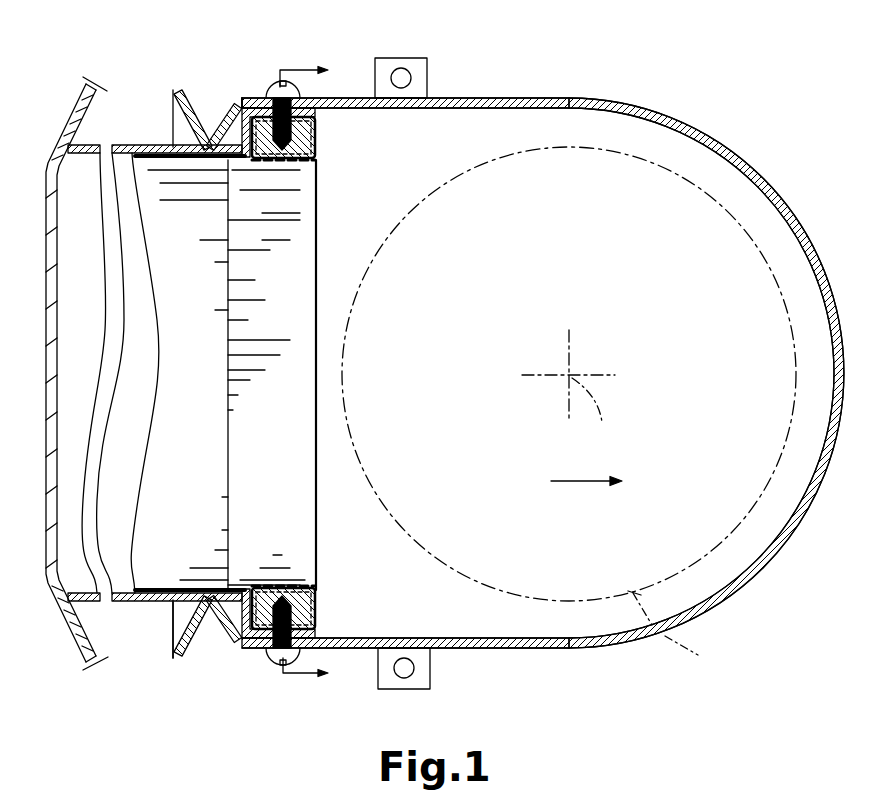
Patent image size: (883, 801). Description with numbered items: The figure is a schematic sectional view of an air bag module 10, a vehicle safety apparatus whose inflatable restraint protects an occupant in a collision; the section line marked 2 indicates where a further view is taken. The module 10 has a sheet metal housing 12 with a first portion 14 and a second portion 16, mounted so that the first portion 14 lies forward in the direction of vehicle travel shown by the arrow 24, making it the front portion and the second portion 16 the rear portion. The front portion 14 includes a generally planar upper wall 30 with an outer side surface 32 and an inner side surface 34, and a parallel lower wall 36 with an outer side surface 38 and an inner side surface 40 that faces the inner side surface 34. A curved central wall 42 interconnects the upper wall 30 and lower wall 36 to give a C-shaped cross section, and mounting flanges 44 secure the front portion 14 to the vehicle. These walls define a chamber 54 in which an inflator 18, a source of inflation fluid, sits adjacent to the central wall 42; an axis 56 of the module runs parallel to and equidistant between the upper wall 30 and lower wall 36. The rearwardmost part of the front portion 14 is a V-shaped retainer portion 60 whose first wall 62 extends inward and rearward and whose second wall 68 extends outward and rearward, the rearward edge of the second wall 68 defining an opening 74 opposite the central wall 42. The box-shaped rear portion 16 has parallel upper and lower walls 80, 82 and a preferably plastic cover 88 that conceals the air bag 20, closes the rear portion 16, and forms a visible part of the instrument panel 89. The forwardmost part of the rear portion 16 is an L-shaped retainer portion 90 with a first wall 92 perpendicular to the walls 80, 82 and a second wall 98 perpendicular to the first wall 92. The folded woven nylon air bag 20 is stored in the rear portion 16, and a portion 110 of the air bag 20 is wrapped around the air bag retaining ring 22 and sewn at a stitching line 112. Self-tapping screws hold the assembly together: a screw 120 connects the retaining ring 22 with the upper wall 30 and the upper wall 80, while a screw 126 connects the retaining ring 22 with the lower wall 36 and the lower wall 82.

The air bag module 10 is at (646, 68).
The housing 12 is at (166, 70).
The first portion 14 is at (686, 112).
The second portion 16 is at (134, 142).
The inflator 18 is at (569, 409).
The air bag 20 is at (322, 220).
The air bag retaining ring 22 is at (320, 608).
The arrow 24 is at (560, 482).
The upper wall 30 is at (522, 92).
The outer side surface 32 is at (494, 97).
The inner side surface 34 is at (466, 108).
The lower wall 36 is at (588, 658).
The outer side surface 38 is at (500, 650).
The inner side surface 40 is at (488, 640).
The curved central wall 42 is at (762, 165).
The mounting flanges 44 is at (396, 58).
The chamber 54 is at (737, 553).
The axis 56 is at (568, 389).
The retainer portion 60 is at (166, 680).
The first wall 62 is at (227, 646).
The second wall 68 is at (195, 650).
The opening 74 is at (163, 640).
The upper wall 80 is at (98, 153).
The lower wall 82 is at (72, 597).
The cover 88 is at (46, 262).
The instrument panel 89 is at (85, 95).
The retainer portion 90 is at (235, 92).
The first wall 92 is at (238, 128).
The second wall 98 is at (257, 98).
The portion of the air bag 110 is at (284, 160).
The stitching line 112 is at (232, 190).
The screw 120 is at (268, 88).
The screw 126 is at (278, 660).
The section line 2 is at (313, 373).